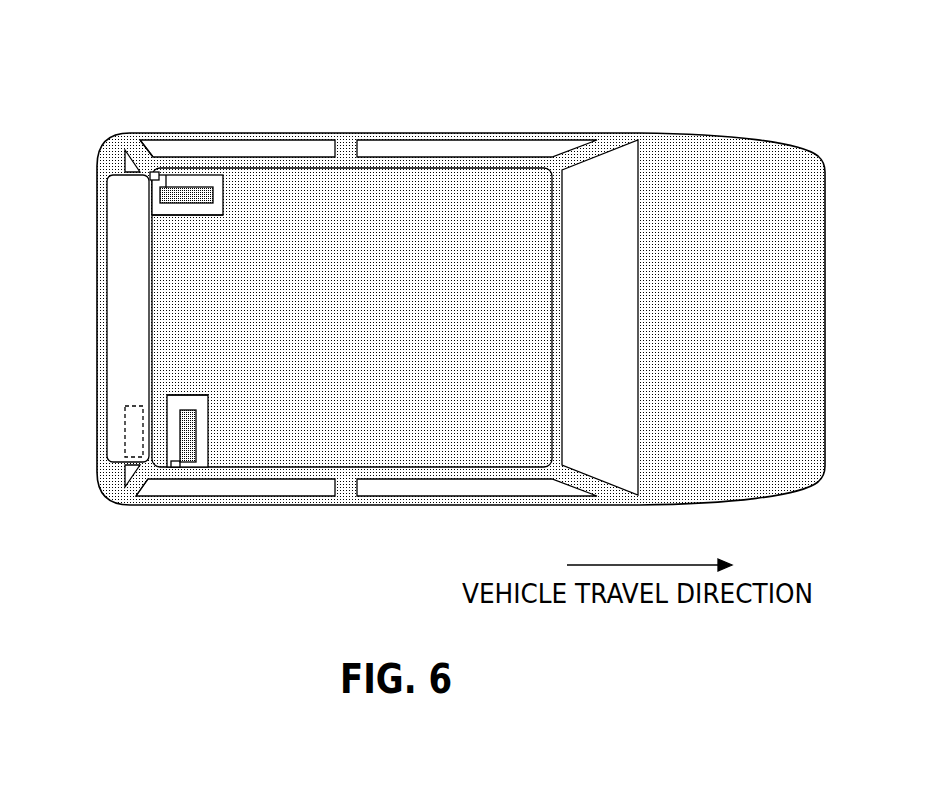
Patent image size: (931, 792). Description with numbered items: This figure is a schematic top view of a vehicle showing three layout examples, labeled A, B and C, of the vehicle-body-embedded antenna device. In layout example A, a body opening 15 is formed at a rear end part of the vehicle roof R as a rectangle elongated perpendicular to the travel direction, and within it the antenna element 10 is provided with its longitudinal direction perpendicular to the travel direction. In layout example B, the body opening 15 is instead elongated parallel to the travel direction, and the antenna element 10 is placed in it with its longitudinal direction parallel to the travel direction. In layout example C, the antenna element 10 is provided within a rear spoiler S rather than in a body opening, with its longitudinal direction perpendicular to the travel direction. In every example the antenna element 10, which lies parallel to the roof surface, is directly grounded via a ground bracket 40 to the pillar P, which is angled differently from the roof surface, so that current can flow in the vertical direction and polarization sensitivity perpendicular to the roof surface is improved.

The antenna element 10 is at (210, 196).
The body opening 15 is at (185, 216).
The ground bracket 40 is at (151, 173).